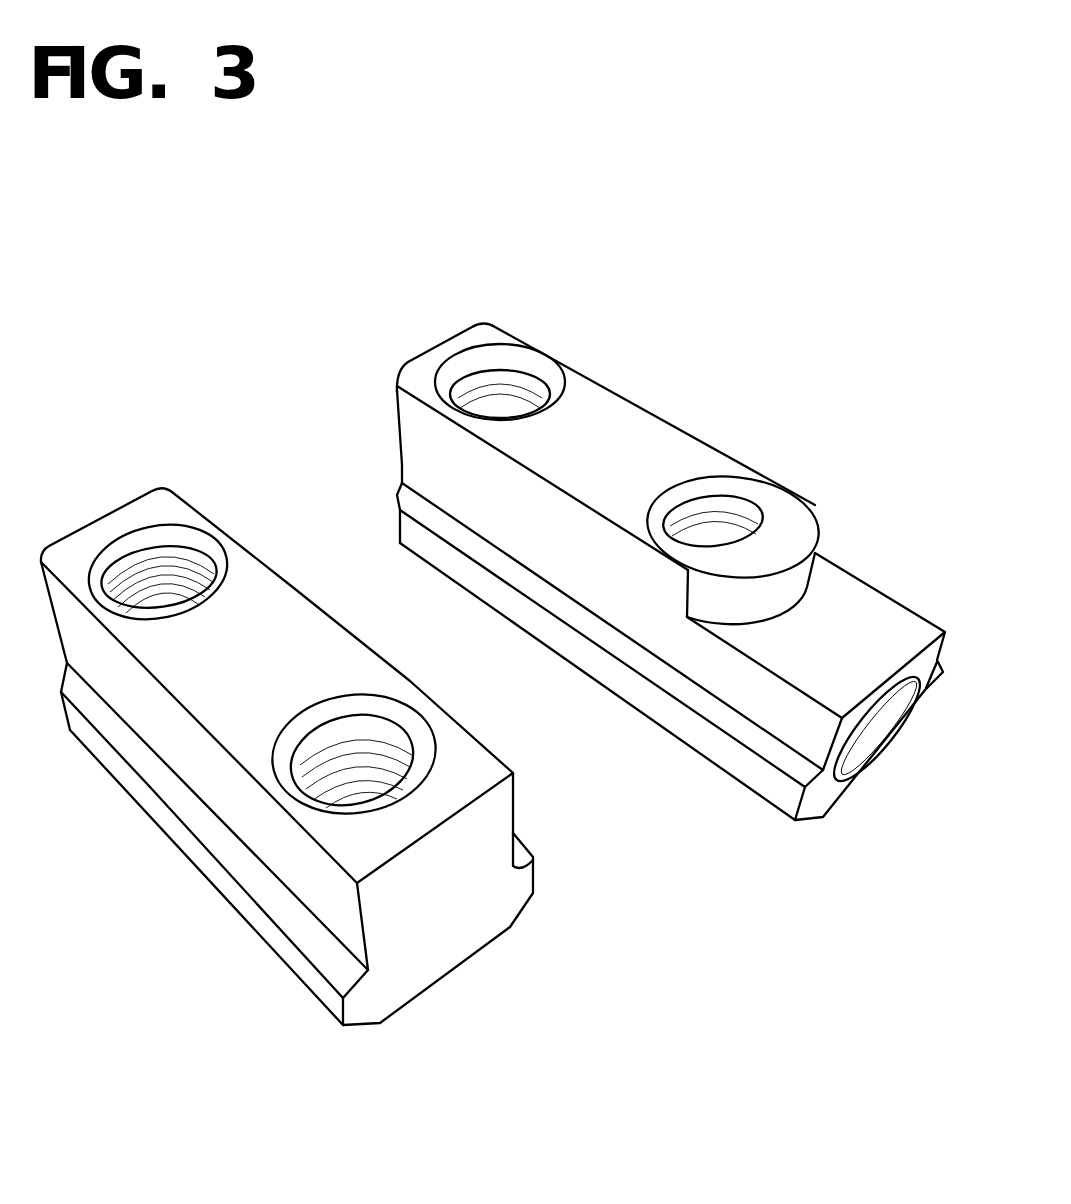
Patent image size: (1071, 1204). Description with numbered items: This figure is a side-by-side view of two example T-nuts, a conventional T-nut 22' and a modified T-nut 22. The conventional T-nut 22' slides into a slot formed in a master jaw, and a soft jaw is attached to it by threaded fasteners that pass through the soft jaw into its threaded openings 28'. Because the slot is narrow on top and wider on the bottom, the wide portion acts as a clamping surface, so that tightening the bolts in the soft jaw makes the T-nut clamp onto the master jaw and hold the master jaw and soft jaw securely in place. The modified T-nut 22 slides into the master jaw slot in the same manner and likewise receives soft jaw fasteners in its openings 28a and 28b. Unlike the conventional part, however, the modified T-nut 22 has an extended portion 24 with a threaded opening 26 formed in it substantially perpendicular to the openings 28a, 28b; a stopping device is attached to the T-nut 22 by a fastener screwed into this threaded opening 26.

The modified T-nut 22 is at (610, 570).
The conventional T-nut 22' is at (287, 738).
The extended portion 24 is at (885, 593).
The threaded opening 26 is at (870, 765).
The opening 28a is at (513, 345).
The opening 28b is at (742, 480).
The threaded openings 28' is at (256, 645).